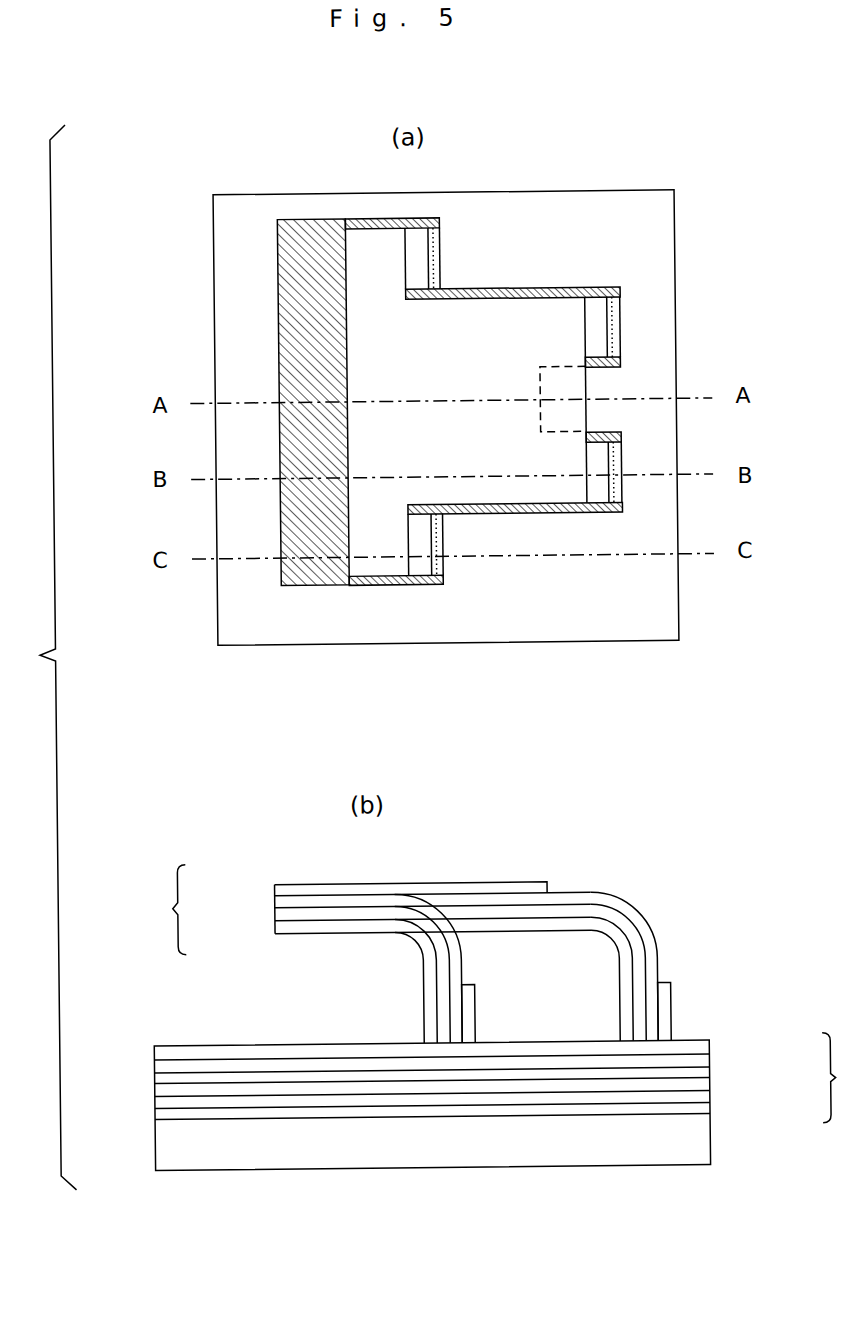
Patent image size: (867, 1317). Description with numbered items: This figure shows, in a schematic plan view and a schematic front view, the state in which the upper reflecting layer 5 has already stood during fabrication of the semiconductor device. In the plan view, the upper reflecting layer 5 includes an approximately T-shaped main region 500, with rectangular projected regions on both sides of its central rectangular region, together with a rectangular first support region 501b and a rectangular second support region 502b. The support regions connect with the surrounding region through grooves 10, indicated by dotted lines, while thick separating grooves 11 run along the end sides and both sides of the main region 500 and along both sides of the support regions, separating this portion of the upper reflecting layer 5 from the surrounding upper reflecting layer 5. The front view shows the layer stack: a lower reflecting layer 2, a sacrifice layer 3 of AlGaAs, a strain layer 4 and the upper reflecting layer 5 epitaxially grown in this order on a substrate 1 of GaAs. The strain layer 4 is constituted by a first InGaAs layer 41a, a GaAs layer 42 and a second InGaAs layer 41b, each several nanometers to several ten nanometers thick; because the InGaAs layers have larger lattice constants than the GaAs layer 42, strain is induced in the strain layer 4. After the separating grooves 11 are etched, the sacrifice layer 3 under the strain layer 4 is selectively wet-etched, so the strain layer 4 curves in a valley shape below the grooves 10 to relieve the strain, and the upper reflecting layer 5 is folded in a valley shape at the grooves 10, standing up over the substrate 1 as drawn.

The substrate 1 is at (545, 191).
The lower reflecting layer 2 is at (695, 1108).
The sacrifice layer 3 is at (695, 1097).
The strain layer 4 is at (500, 995).
The first InGaAs layer 41a is at (287, 926).
The second InGaAs layer 41b is at (287, 900).
The GaAs layer 42 is at (287, 914).
The upper reflecting layer 5 is at (670, 228).
The grooves 10 is at (447, 252).
The separating grooves 11 is at (374, 217).
The main region 500 is at (501, 311).
The first support region 501b is at (676, 997).
The second support region 502b is at (481, 995).